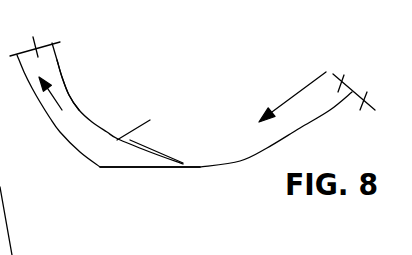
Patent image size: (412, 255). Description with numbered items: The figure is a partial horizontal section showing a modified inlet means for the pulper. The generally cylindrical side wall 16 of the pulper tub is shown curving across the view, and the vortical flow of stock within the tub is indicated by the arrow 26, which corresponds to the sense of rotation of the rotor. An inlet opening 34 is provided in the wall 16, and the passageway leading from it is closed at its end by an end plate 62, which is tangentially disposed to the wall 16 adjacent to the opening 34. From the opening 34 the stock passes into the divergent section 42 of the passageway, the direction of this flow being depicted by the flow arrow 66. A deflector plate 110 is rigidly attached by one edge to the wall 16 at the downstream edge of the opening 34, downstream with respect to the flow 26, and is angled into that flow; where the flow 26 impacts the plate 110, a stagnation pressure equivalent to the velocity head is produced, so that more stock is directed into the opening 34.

The side wall 16 is at (60, 69).
The flow arrow 66 is at (54, 95).
The divergent section 42 is at (102, 149).
The deflector plate 110 is at (132, 131).
The inlet opening 34 is at (172, 157).
The end plate 62 is at (137, 168).
The arrow 26 is at (294, 97).